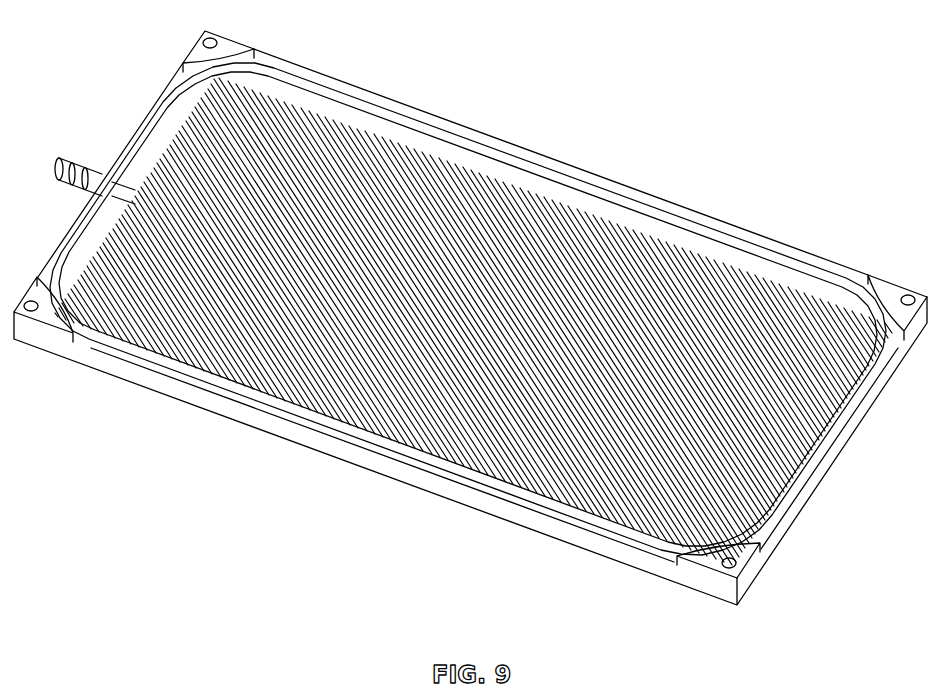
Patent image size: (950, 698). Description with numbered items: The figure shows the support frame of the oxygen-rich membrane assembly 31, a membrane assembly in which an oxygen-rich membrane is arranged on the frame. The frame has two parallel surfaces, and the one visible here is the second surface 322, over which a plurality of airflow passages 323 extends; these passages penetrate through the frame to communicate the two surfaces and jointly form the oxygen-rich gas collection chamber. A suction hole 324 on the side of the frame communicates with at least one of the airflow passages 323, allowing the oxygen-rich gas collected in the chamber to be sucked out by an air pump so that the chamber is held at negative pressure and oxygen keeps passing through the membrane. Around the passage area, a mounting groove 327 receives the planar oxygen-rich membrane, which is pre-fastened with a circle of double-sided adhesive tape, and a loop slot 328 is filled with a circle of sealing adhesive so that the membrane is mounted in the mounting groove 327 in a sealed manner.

The oxygen-rich membrane assembly 31 is at (84, 34).
The second surface 322 is at (453, 126).
The airflow passages 323 is at (765, 296).
The suction hole 324 is at (58, 172).
The mounting groove 327 is at (871, 342).
The loop slot 328 is at (852, 293).